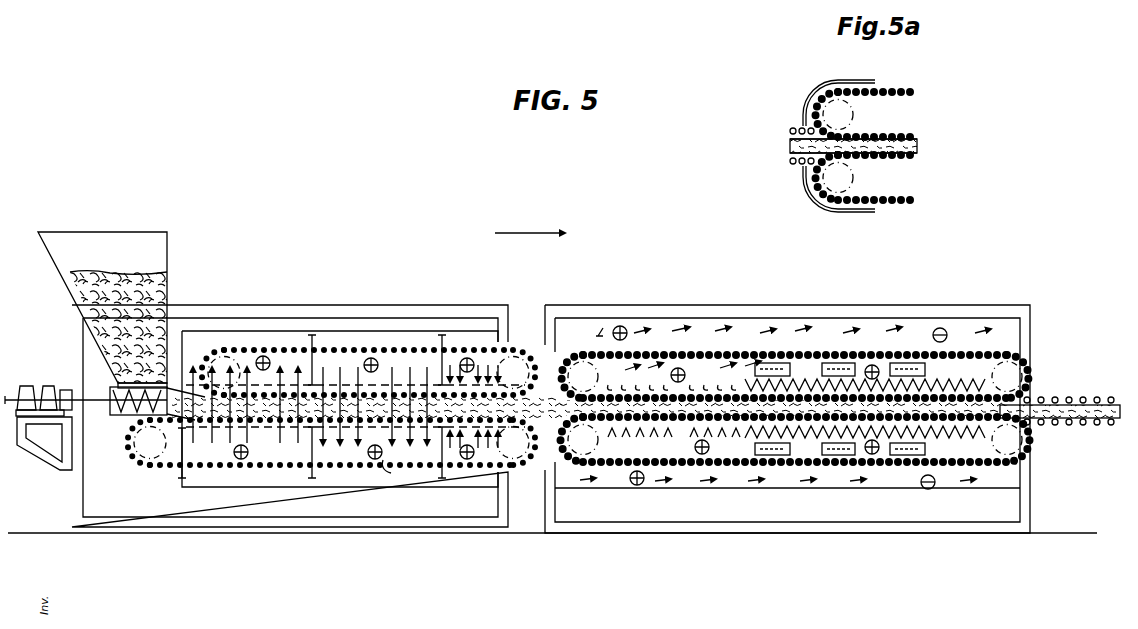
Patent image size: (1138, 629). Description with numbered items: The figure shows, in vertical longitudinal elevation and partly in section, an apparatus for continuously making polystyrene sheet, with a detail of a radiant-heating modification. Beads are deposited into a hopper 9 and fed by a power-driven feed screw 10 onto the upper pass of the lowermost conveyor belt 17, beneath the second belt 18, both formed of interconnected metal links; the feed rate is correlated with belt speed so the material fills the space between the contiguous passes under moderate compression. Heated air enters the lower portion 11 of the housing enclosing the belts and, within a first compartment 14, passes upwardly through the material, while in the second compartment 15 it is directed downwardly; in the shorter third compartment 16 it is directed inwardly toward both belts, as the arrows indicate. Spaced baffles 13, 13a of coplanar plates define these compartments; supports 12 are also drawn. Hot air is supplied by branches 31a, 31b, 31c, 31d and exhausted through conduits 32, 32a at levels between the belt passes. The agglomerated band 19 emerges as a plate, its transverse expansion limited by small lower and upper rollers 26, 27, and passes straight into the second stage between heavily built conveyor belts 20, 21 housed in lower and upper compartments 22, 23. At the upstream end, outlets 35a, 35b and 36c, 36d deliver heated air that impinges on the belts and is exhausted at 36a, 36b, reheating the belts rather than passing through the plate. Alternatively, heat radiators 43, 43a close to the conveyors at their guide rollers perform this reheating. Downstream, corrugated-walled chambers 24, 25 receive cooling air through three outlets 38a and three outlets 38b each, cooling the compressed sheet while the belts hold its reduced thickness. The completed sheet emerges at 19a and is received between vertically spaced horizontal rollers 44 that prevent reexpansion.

In FIG. 5, the hopper 9 is at (160, 250).
In FIG. 5a, the hopper 9 is at (797, 130).
In FIG. 5, the feed screw 10 is at (118, 418).
In FIG. 5, the lower portion of housing 11 is at (285, 487).
In FIG. 5, the plenum supports 12 is at (318, 332).
In FIG. 5, the baffle 13 is at (320, 365).
In FIG. 5, the baffle 13a is at (449, 367).
In FIG. 5, the first compartment 14 is at (255, 337).
In FIG. 5, the second compartment 15 is at (386, 340).
In FIG. 5, the third compartment 16 is at (485, 344).
In FIG. 5, the lowermost conveyor belt 17 is at (378, 460).
In FIG. 5, the second conveyor belt 18 is at (469, 351).
In FIG. 5, the band 19 is at (517, 428).
In FIG. 5, the emerging completed sheet 19a is at (1060, 400).
In FIG. 5, the lower conveyor belt 20 is at (776, 468).
In FIG. 5a, the lower conveyor belt 20 is at (890, 204).
In FIG. 5, the upper conveyor belt 21 is at (780, 354).
In FIG. 5a, the upper conveyor belt 21 is at (893, 88).
In FIG. 5, the lower compartment 22 is at (708, 480).
In FIG. 5, the upper compartment 23 is at (693, 330).
In FIG. 5, the lower chamber 24 is at (950, 456).
In FIG. 5, the upper chamber 25 is at (963, 370).
In FIG. 5, the lower roller 26 is at (538, 428).
In FIG. 5, the upper roller 27 is at (528, 360).
In FIG. 5, the supply branch 31a is at (238, 458).
In FIG. 5, the second supply branch 31b is at (378, 363).
In FIG. 5, the supply branch 31c is at (472, 362).
In FIG. 5, the supply branch 31d is at (466, 460).
In FIG. 5, the exhaust conduit 32 is at (261, 359).
In FIG. 5, the exhaust conduit 32a is at (401, 474).
In FIG. 5, the first outlet 35a is at (620, 326).
In FIG. 5, the second outlet 35b is at (631, 483).
In FIG. 5, the exhaust 36a is at (940, 328).
In FIG. 5, the exhaust 36b is at (925, 489).
In FIG. 5, the third outlet 36c is at (695, 448).
In FIG. 5, the fourth outlet 36d is at (684, 371).
In FIG. 5, the cooling air outlets 38a is at (903, 368).
In FIG. 5, the cooling air outlets 38b is at (907, 452).
In FIG. 5a, the heat radiator 43 is at (840, 212).
In FIG. 5a, the heat radiator 43a is at (838, 80).
In FIG. 5, the horizontal rollers 44 is at (1070, 427).